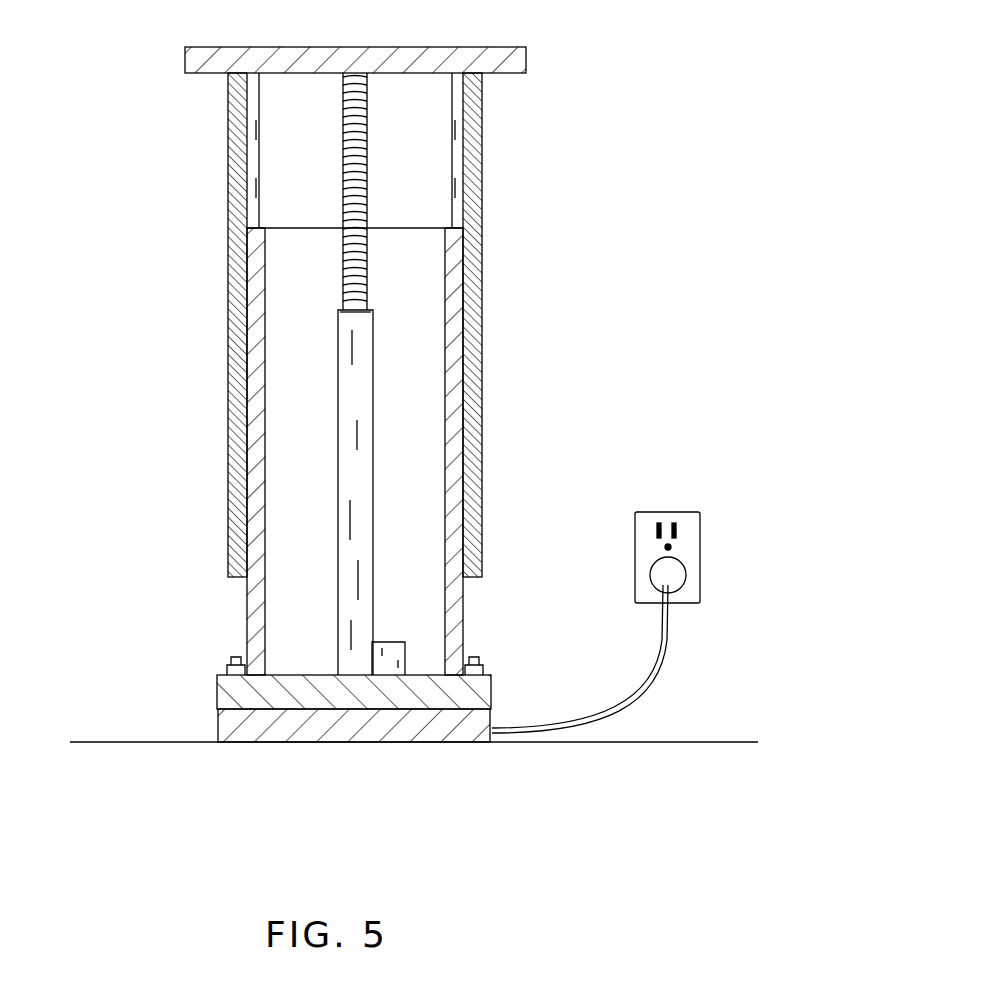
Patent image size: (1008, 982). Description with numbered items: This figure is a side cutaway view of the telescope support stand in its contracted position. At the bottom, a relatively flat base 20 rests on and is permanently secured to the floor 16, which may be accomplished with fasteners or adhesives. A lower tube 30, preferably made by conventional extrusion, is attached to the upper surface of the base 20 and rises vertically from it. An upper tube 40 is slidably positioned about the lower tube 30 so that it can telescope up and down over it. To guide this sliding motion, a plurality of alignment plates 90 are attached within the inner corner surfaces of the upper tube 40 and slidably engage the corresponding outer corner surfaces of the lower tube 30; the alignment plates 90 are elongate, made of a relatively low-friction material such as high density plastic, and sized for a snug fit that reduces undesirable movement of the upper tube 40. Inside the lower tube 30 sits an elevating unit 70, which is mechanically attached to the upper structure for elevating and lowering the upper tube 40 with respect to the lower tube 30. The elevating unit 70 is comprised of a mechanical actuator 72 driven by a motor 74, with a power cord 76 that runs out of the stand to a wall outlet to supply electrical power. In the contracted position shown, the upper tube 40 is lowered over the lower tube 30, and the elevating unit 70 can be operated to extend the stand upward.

The floor 16 is at (706, 742).
The base 20 is at (418, 745).
The lower tube 30 is at (452, 307).
The upper tube 40 is at (474, 193).
The elevating unit 70 is at (362, 463).
The mechanical actuator 72 is at (363, 522).
The motor 74 is at (357, 137).
The power cord 76 is at (660, 652).
The alignment plates 90 is at (252, 88).